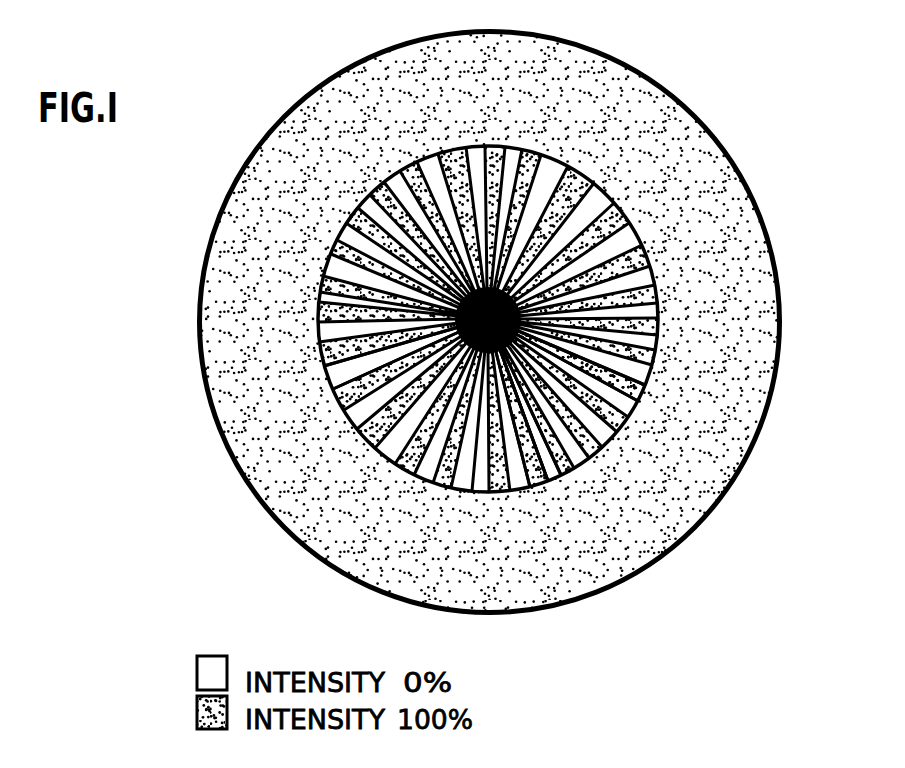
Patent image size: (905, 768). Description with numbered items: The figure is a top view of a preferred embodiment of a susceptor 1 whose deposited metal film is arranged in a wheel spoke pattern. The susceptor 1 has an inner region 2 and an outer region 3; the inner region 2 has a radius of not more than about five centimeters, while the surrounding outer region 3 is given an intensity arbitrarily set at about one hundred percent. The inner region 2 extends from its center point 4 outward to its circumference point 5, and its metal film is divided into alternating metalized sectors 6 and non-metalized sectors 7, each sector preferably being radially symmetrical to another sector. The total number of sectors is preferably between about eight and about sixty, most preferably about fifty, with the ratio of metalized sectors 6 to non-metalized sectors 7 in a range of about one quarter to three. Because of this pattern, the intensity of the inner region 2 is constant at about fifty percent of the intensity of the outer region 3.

The susceptor 1 is at (706, 106).
The inner region 2 is at (572, 184).
The outer region 3 is at (741, 226).
The center point 4 is at (330, 372).
The circumference point 5 is at (639, 384).
The metalized sectors 6 is at (535, 478).
The non-metalized sectors 7 is at (553, 467).